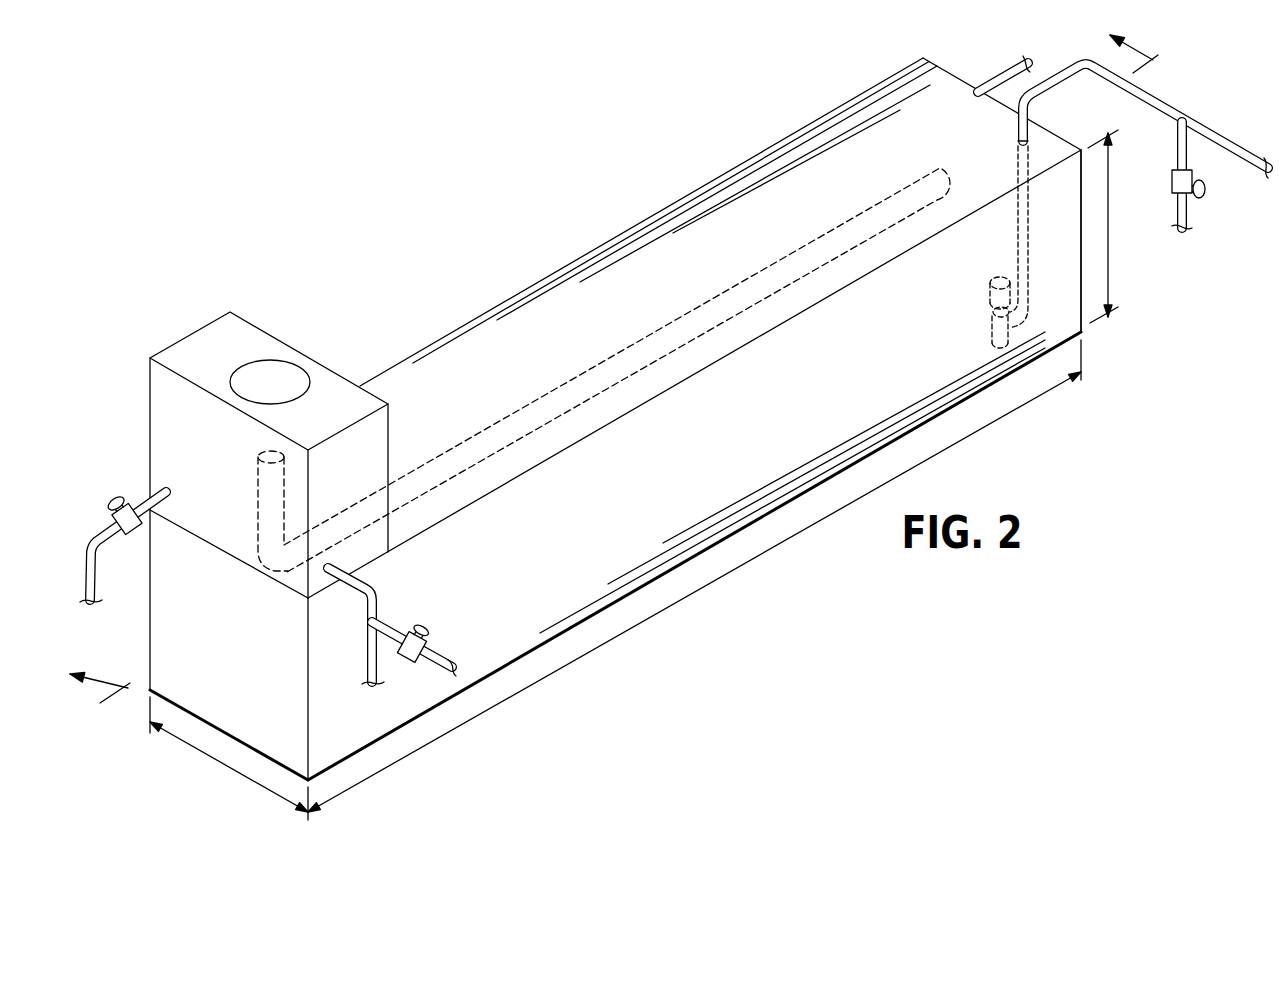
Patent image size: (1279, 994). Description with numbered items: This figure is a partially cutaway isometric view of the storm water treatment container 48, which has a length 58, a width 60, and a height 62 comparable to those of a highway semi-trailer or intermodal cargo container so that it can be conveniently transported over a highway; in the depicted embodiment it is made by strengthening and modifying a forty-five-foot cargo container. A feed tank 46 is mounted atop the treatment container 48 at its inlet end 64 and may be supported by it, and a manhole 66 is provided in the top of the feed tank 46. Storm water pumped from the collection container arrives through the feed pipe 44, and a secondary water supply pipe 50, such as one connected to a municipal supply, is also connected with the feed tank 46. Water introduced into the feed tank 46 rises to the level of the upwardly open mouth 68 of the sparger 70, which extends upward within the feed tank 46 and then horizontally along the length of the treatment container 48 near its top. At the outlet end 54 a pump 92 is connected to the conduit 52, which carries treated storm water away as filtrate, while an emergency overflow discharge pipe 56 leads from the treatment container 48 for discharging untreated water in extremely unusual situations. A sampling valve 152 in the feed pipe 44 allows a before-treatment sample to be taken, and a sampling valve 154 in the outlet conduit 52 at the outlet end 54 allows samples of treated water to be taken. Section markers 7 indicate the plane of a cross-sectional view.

The feed tank 46 is at (196, 331).
The treatment container 48 is at (590, 203).
The secondary water supply pipe 50 is at (85, 532).
The conduit 52 is at (1225, 137).
The outlet end 54 is at (1083, 243).
The emergency overflow discharge pipe 56 is at (997, 70).
The length 58 is at (742, 562).
The width 60 is at (230, 770).
The height 62 is at (1108, 280).
The inlet end 64 is at (172, 633).
The manhole 66 is at (278, 368).
The mouth 68 is at (270, 457).
The sparger 70 is at (657, 334).
The pump 92 is at (988, 330).
The section line 7- 7 is at (624, 379).
The feed pipe 44 is at (370, 583).
The sampling valve 152 is at (422, 622).
The sampling valve 154 is at (1204, 196).